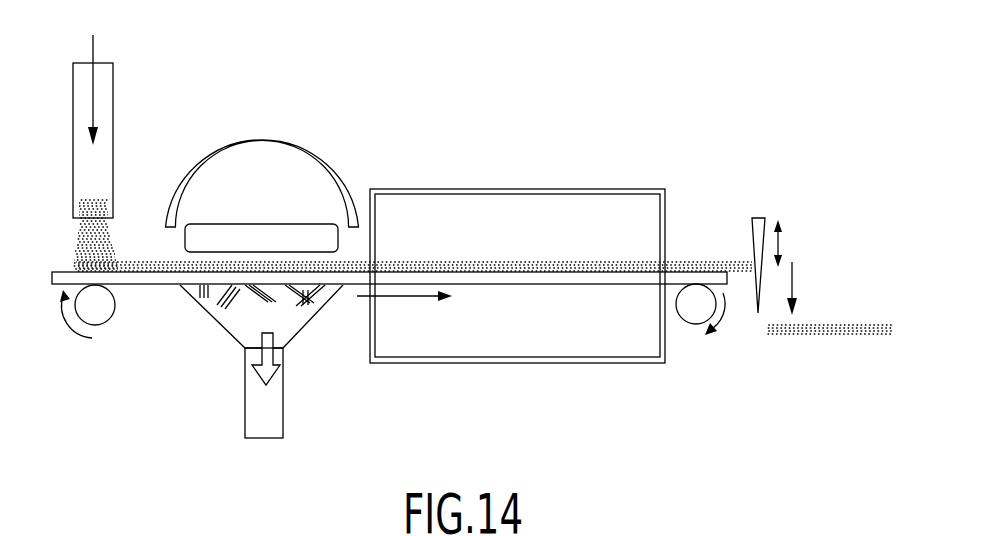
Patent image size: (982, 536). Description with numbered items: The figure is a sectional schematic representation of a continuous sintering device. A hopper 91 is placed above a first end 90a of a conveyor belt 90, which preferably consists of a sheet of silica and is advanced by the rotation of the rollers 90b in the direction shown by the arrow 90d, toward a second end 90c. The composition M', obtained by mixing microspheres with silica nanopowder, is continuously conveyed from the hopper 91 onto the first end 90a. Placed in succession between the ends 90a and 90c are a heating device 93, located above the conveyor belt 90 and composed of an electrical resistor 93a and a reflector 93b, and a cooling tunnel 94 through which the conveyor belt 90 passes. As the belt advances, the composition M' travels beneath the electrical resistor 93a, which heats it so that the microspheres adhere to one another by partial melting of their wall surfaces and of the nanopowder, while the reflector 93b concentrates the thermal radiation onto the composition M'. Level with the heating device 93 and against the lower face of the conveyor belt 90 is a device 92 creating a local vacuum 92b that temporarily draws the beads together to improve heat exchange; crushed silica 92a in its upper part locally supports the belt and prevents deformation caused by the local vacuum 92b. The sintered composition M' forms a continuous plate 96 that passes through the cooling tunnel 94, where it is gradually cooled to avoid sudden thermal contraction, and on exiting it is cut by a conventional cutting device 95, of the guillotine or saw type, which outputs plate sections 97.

The conveyor belt 90 is at (62, 266).
The first end of the conveyor belt 90a is at (127, 285).
The rollers 90b is at (92, 312).
The second end of the conveyor belt 90c is at (713, 278).
The arrow indicating direction of advance 90d is at (410, 300).
The hopper 91 is at (106, 115).
The device creating a local vacuum 92 is at (237, 330).
The crushed silica 92a is at (213, 298).
The local vacuum 92b is at (250, 380).
The heating device 93 is at (259, 136).
The electrical resistor 93a is at (220, 240).
The reflector 93b is at (308, 160).
The cooling tunnel 94 is at (428, 180).
The cutting device 95 is at (757, 217).
The continuous plate 96 is at (466, 266).
The plate sections 97 is at (850, 327).
The composition M' is at (412, 138).